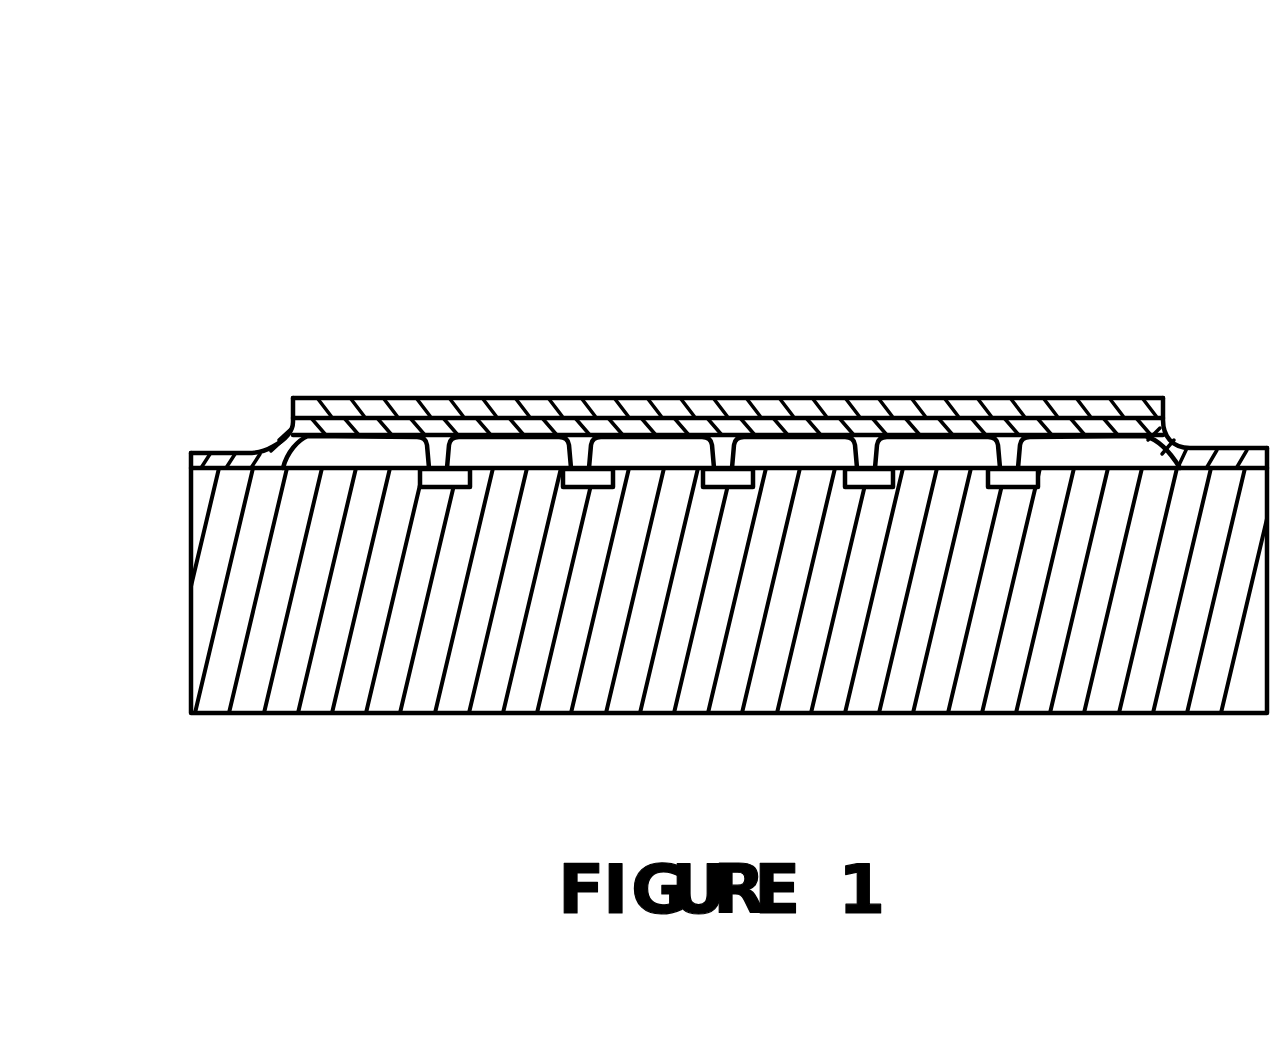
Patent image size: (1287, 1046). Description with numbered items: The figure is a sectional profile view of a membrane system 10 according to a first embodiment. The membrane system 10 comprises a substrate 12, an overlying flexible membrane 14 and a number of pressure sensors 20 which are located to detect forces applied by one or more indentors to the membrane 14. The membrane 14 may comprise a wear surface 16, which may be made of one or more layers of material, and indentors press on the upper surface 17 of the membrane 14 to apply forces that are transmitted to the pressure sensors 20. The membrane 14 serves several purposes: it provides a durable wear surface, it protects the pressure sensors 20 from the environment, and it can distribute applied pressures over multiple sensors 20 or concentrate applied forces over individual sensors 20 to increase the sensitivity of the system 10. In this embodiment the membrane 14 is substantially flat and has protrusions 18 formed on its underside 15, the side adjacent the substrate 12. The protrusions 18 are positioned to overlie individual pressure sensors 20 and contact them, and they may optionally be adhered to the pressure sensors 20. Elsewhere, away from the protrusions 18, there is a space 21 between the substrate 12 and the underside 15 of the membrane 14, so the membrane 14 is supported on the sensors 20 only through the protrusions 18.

The membrane system 10 is at (652, 456).
The substrate 12 is at (243, 657).
The flexible membrane 14 is at (287, 437).
The underside 15 is at (487, 467).
The wear surface 16 is at (1100, 395).
The upper surface 17 is at (735, 521).
The protrusions 18 is at (717, 463).
The pressure sensors 20 is at (732, 486).
The space 21 is at (953, 428).